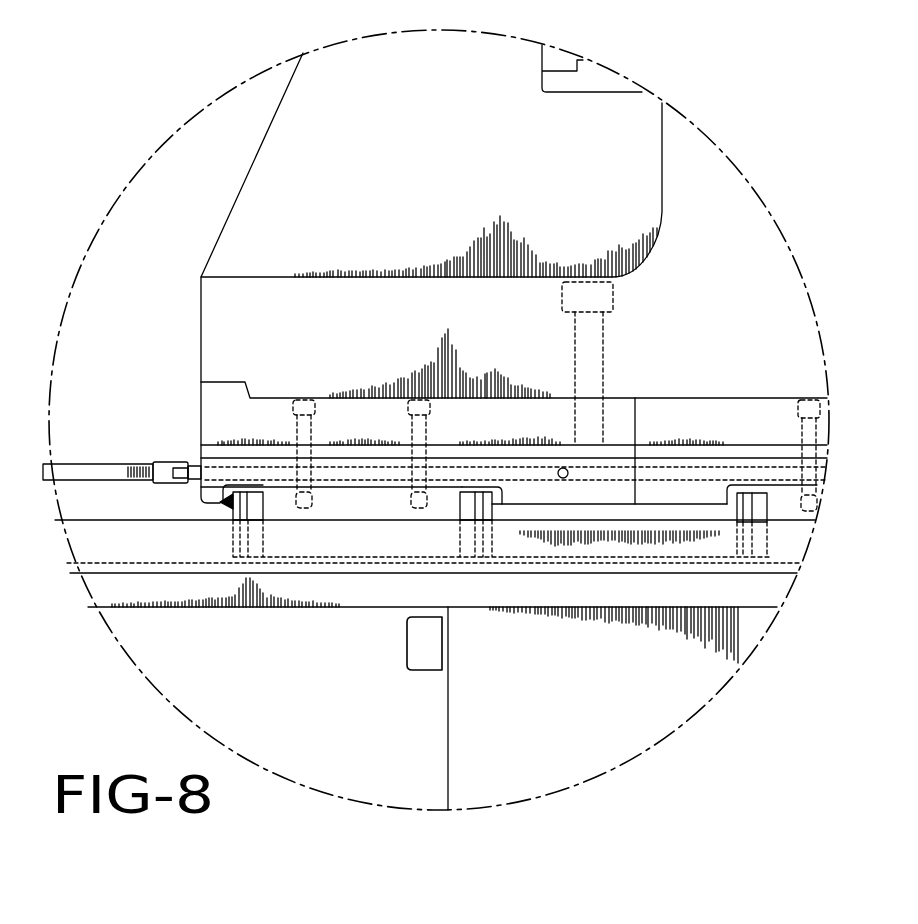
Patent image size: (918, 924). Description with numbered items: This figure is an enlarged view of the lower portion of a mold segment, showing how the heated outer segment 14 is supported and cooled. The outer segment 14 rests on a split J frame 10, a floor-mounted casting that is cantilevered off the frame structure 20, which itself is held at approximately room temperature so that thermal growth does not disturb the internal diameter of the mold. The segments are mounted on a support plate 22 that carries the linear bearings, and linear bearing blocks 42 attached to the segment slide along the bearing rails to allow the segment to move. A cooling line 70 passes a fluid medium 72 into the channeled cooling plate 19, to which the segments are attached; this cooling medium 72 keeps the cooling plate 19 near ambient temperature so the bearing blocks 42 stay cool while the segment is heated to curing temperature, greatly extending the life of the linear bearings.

The split J frame 10 is at (200, 680).
The outer segment 14 is at (697, 178).
The channeled cooling plate 19 is at (705, 490).
The frame structure 20 is at (745, 637).
The support plate 22 is at (515, 560).
The linear bearing block 42 is at (284, 500).
The cooling line 70 is at (88, 468).
The fluid medium 72 is at (672, 473).